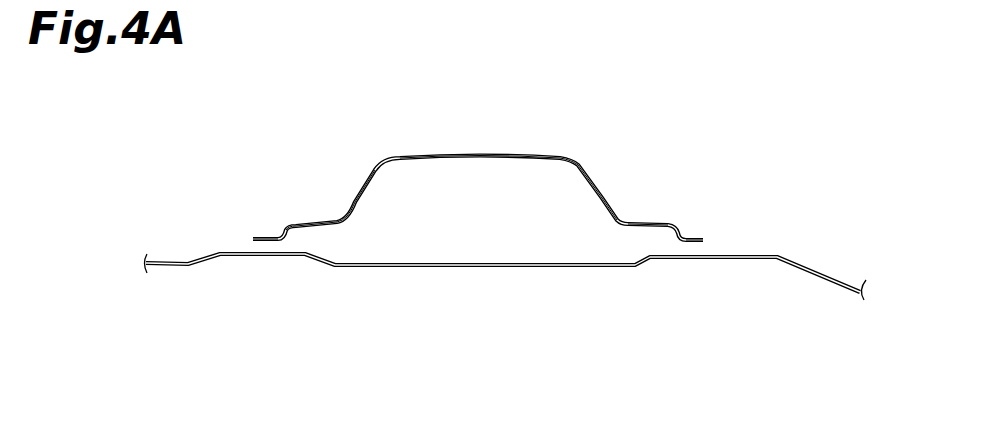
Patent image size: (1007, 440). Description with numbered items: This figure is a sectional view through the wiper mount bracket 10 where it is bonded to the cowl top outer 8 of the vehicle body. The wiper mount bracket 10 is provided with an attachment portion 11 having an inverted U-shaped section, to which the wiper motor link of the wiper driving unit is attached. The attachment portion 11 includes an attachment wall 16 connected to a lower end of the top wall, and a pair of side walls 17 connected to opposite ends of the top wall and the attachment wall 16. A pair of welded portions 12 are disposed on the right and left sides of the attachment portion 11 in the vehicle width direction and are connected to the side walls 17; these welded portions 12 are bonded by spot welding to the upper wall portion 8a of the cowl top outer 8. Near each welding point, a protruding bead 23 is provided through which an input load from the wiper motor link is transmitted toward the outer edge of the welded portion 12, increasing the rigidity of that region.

The cowl top outer 8 is at (542, 268).
The upper wall portion 8a is at (443, 268).
The wiper mount bracket 10 is at (399, 146).
The attachment portion 11 is at (547, 155).
The welded portion 12 is at (268, 237).
The attachment wall 16 is at (477, 157).
The side wall 17 is at (353, 200).
The bead 23 is at (282, 222).